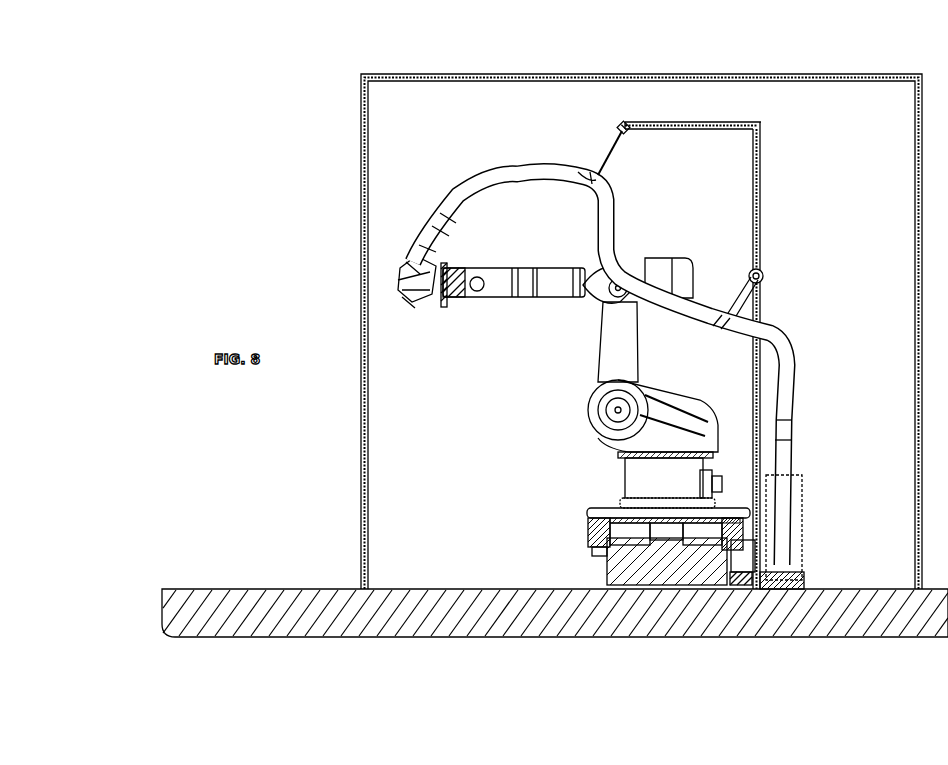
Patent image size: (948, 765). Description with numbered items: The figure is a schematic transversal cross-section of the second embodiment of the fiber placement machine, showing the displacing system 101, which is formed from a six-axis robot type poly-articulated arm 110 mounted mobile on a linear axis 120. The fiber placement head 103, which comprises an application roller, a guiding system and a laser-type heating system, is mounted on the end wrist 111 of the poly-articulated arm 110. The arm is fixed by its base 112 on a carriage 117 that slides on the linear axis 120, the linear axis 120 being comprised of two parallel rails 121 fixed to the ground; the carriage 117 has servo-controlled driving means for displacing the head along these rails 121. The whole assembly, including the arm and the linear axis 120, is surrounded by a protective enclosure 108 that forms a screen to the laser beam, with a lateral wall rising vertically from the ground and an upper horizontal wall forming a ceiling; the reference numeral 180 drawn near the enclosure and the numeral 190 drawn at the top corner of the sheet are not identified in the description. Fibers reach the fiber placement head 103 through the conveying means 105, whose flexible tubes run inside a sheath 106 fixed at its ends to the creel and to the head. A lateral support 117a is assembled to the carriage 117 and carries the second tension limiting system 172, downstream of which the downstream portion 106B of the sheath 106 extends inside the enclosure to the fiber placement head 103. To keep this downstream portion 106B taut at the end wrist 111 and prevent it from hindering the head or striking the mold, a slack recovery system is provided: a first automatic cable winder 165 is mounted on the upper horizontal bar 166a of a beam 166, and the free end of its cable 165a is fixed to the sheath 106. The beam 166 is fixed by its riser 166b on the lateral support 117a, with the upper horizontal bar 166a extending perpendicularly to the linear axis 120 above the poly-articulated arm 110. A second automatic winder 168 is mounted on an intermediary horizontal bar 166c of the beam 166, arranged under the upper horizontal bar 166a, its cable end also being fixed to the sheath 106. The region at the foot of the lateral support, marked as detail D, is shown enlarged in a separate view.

The displacing system 101 is at (614, 420).
The fiber placement head 103 is at (408, 299).
The conveying means 105 is at (602, 343).
The sheath 106 is at (472, 197).
The downstream portion of the sheath 106B is at (583, 180).
The protective enclosure 108 is at (360, 124).
The poly-articulated arm 110 is at (600, 372).
The end wrist 111 is at (470, 300).
The base 112 is at (625, 482).
The carriage 117 is at (598, 510).
The lateral support 117a is at (762, 560).
The linear axis 120 is at (606, 578).
The rails 121 is at (590, 535).
The first automatic cable winder 165 is at (632, 137).
The cable 165a is at (618, 145).
The beam 166 is at (725, 339).
The upper horizontal bar 166a is at (710, 122).
The riser 166b is at (761, 180).
The intermediary horizontal bar 166c is at (763, 274).
The second automatic winder 168 is at (768, 288).
The second tension limiting system 172 is at (803, 490).
The enclosure 180 is at (810, 100).
The system 190 is at (937, 7).
The detail D is at (810, 580).